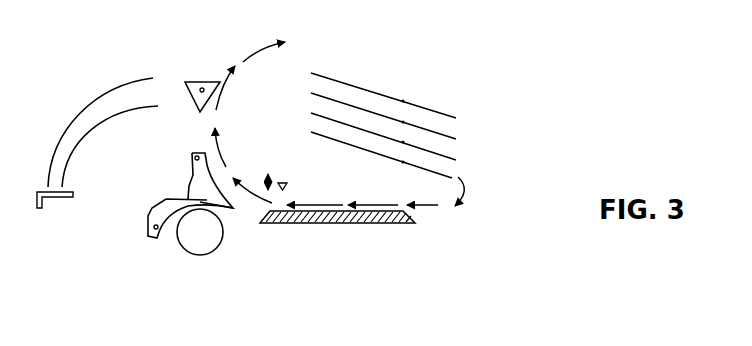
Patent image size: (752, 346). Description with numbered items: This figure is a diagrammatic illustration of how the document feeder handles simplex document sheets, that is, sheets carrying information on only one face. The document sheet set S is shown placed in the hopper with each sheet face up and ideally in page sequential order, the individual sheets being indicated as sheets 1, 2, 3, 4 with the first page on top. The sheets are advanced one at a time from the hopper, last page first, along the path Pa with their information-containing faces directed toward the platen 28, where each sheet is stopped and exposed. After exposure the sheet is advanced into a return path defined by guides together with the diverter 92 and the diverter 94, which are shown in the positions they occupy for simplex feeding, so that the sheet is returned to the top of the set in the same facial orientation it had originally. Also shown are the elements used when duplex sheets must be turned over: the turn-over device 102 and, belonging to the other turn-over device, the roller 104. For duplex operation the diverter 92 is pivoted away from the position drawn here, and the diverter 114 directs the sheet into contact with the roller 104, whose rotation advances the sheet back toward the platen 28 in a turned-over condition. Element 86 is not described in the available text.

The turn-over device 102 is at (111, 84).
The diverter 94 is at (206, 80).
The diverter 92 is at (196, 170).
The diverter 114 is at (148, 224).
The roller 104 is at (189, 256).
The detector 86 is at (288, 187).
The platen 28 is at (404, 225).
The document sheet set S is at (383, 92).
The first sheet 1 is at (427, 99).
The second sheet 2 is at (427, 120).
The third sheet 3 is at (427, 140).
The fourth sheet 4 is at (427, 161).
The path Pa is at (468, 201).